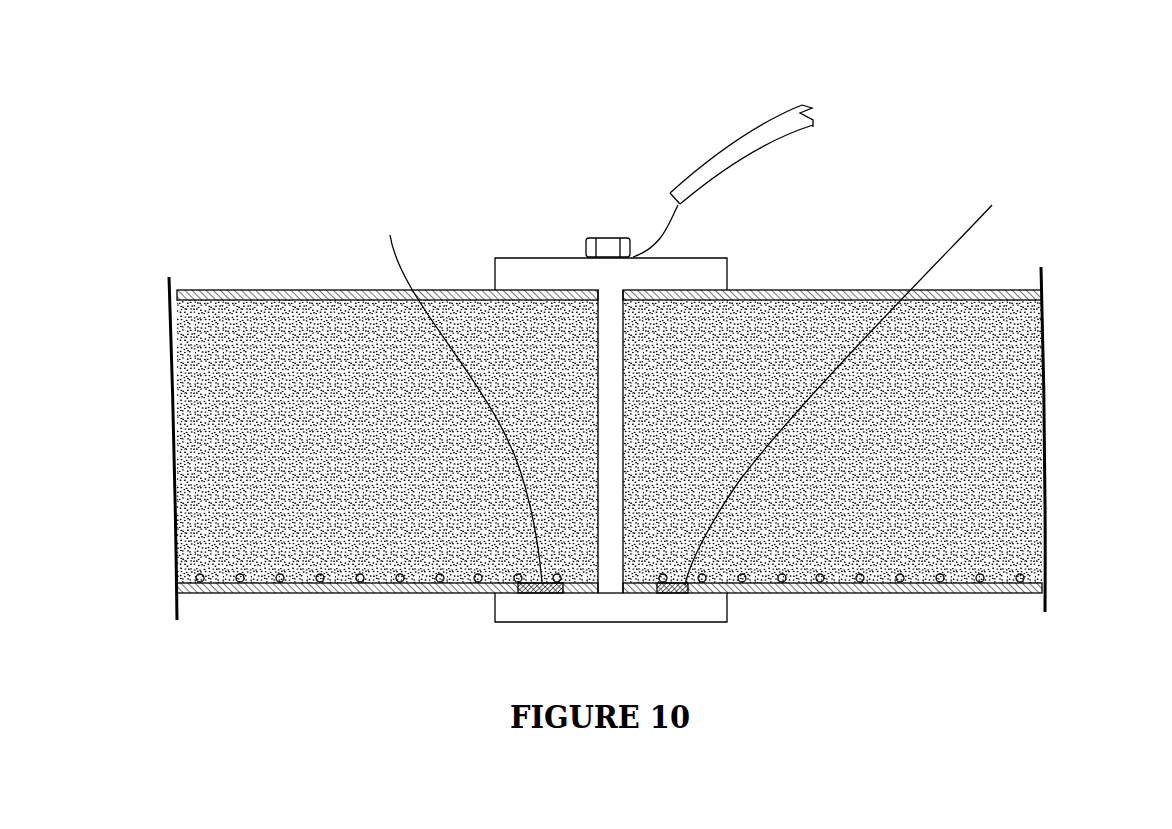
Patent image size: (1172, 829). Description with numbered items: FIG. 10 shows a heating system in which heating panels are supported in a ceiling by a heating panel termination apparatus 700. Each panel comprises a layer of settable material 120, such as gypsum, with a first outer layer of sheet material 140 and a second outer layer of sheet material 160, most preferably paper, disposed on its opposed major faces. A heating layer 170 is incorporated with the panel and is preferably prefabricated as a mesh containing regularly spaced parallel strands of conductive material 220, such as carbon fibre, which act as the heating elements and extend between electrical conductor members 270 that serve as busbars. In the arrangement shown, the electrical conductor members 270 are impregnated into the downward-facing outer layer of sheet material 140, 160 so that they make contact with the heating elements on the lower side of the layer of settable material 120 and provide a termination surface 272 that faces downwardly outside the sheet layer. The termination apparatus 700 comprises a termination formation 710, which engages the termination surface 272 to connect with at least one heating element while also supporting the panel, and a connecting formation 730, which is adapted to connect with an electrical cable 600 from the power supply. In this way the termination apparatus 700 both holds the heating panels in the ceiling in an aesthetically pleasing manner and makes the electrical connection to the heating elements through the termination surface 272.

The layer of settable material 120 is at (1000, 437).
The first outer layer of sheet material 140 is at (970, 291).
The second outer layer of sheet material 160 is at (974, 593).
The heating layer 170 is at (172, 573).
The strands of conductive material 220 is at (943, 594).
The electrical conductor members 270 is at (698, 379).
The termination surface 272 is at (557, 600).
The electrical cable 600 is at (736, 152).
The heating panel termination apparatus 700 is at (758, 252).
The termination formation 710 is at (538, 600).
The connecting formation 730 is at (603, 232).